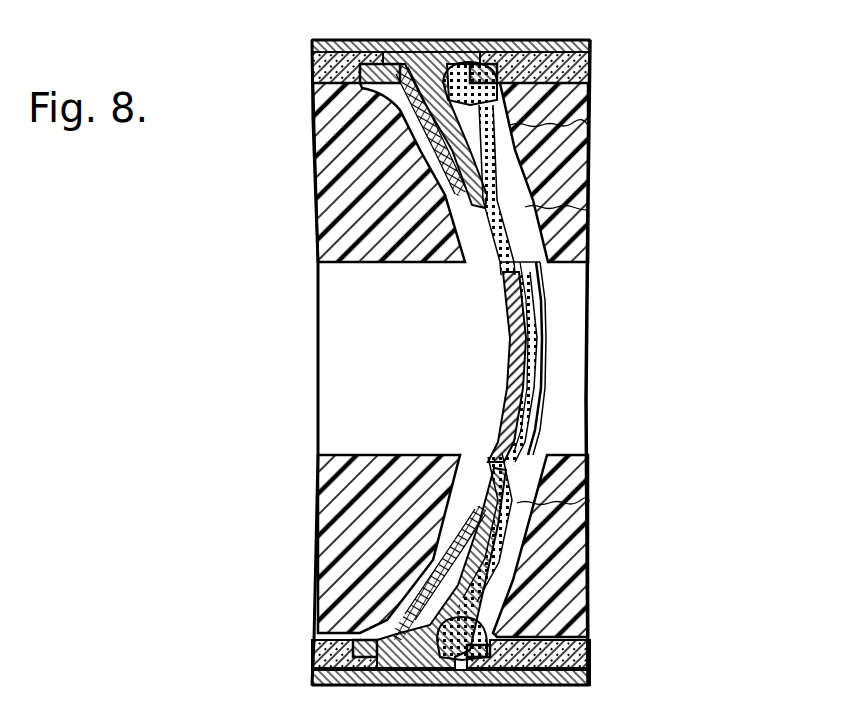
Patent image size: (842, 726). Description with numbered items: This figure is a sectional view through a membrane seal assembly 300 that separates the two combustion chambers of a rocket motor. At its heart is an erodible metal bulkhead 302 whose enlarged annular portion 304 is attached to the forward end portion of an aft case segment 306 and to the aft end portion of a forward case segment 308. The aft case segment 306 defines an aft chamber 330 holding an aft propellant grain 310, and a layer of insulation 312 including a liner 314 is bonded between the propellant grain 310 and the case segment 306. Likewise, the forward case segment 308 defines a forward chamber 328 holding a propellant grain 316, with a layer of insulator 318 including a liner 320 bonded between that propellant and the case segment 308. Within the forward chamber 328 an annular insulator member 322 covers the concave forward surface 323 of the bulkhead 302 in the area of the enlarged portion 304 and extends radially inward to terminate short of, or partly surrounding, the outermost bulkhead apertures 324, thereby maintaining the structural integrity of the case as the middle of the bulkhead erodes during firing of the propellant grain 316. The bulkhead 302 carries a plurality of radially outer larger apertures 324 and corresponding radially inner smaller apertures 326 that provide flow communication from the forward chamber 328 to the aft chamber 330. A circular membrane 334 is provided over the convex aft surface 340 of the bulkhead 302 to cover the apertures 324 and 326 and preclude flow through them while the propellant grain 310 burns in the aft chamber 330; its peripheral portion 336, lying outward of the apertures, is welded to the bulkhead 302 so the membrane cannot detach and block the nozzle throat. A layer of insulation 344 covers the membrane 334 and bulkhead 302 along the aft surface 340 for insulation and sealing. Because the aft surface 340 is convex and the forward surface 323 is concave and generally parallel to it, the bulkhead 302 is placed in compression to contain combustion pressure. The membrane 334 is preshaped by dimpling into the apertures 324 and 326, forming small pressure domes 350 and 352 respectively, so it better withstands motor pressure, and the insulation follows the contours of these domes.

The membrane seal assembly 300 is at (600, 280).
The erodible metal bulkhead 302 is at (508, 363).
The enlarged annular portion 304 is at (428, 52).
The aft case segment 306 is at (590, 45).
The forward case segment 308 is at (326, 40).
The aft propellant grain 310 is at (590, 160).
The layer of insulation 312 is at (592, 64).
The liner 314 is at (590, 78).
The propellant grain 316 is at (318, 182).
The layer of insulator 318 is at (312, 62).
The liner 320 is at (312, 80).
The annular insulator member 322 is at (400, 113).
The forward surface 323 is at (454, 556).
The outermost bulkhead apertures 324 is at (590, 210).
The radially inner smaller apertures 326 is at (542, 317).
The forward chamber 328 is at (362, 365).
The aft chamber 330 is at (585, 372).
The circular membrane 334 is at (560, 283).
The peripheral portion 336 is at (590, 125).
The aft surface 340 is at (542, 428).
The layer of insulation 344 is at (546, 343).
The pressure domes 350 is at (500, 268).
The pressure domes 352 is at (506, 322).